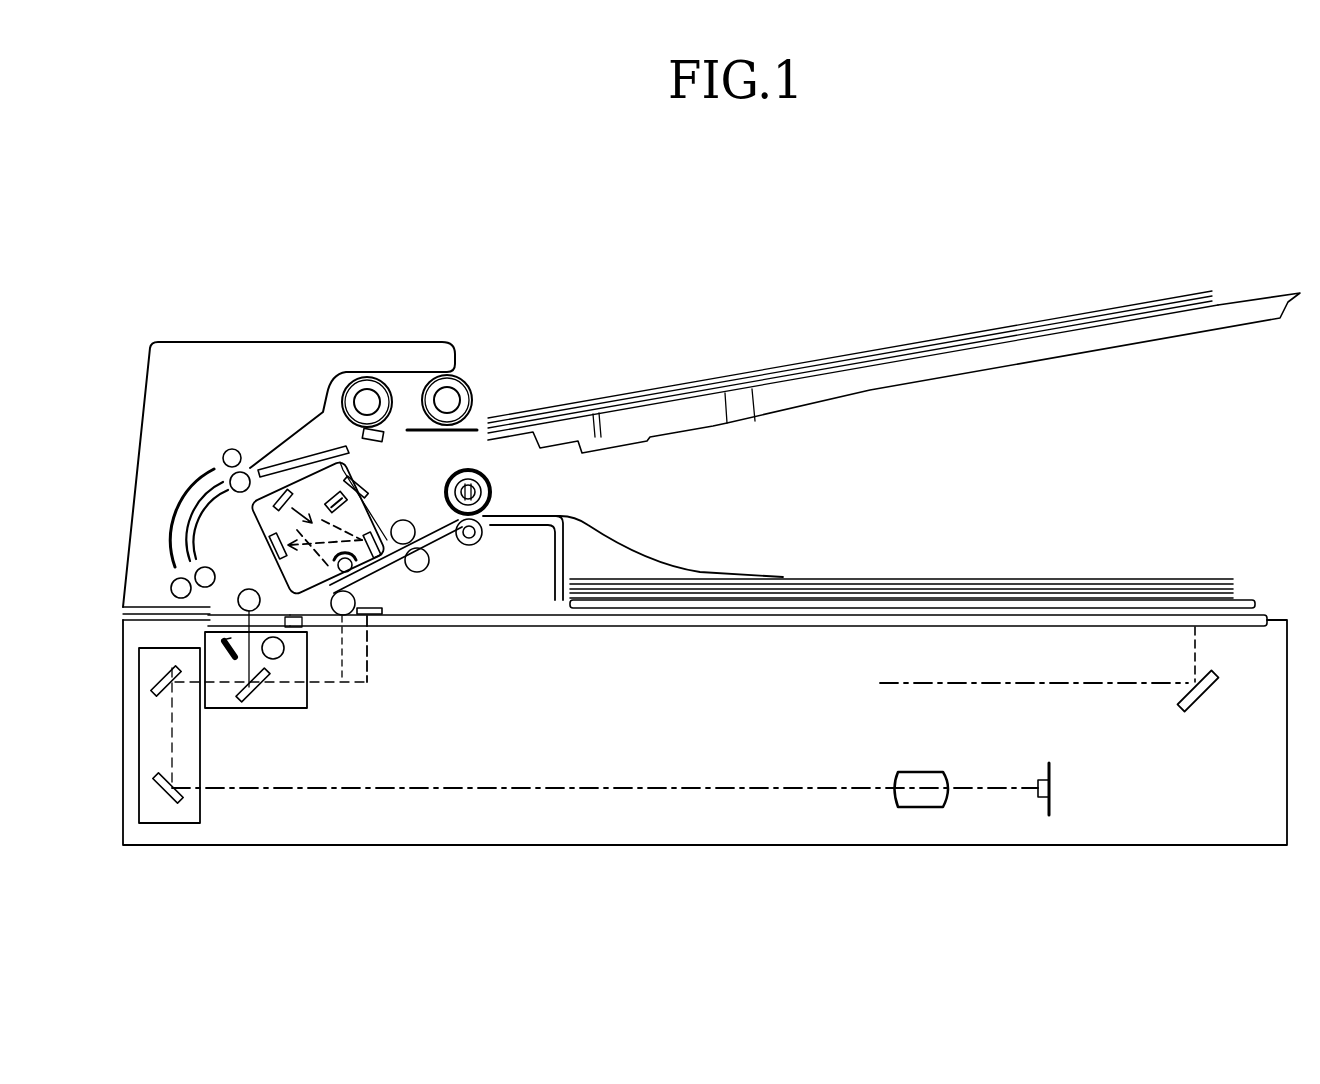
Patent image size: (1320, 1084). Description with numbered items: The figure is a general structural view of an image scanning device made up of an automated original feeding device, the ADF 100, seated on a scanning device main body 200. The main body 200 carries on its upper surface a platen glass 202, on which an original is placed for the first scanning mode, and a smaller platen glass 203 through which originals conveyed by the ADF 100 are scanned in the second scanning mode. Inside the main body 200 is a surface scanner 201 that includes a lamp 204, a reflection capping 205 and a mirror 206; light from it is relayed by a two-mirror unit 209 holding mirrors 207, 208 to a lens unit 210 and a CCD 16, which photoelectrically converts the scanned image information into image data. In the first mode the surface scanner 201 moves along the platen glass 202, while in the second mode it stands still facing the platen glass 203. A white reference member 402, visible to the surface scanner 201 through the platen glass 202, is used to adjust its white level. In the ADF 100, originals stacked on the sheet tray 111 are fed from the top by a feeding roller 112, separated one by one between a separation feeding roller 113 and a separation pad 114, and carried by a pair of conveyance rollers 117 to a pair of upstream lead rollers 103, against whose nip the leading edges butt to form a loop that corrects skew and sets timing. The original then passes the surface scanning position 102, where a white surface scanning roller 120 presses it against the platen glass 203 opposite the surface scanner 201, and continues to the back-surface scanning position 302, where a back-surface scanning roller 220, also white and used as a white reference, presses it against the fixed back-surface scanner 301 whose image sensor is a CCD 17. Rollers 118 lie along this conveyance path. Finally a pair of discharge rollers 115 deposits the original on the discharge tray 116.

The ADF 100 is at (412, 326).
The sheet tray 111 is at (1056, 360).
The feeding roller 112 is at (466, 383).
The separation feeding roller 113 is at (363, 377).
The separation pad 114 is at (387, 441).
The pair of discharge rollers 115 is at (490, 484).
The discharge tray 116 is at (990, 578).
The pair of conveyance rollers 117 is at (232, 449).
The conveying roller pair 118 is at (430, 562).
The surface scanning roller 120 is at (226, 586).
The surface scanning position 102 is at (262, 587).
The pair of upstream lead rollers 103 is at (173, 594).
The back-surface scanner 301 is at (245, 510).
The back-surface scanning position 302 is at (358, 587).
The white reference member 402 is at (390, 624).
The CCD 17 is at (360, 477).
The scanning device main body 200 is at (963, 849).
The surface scanner 201 is at (302, 710).
The platen glass 202 is at (706, 628).
The platen glass 203 is at (208, 622).
The lamp 204 is at (284, 656).
The reflection capping 205 is at (230, 658).
The mirror 206 is at (253, 700).
The mirror 207 is at (150, 688).
The mirror 208 is at (152, 792).
The two-mirror unit 209 is at (139, 751).
The lens unit 210 is at (917, 768).
The CCD 16 is at (1050, 778).
The back-surface scanning roller 220 is at (368, 649).